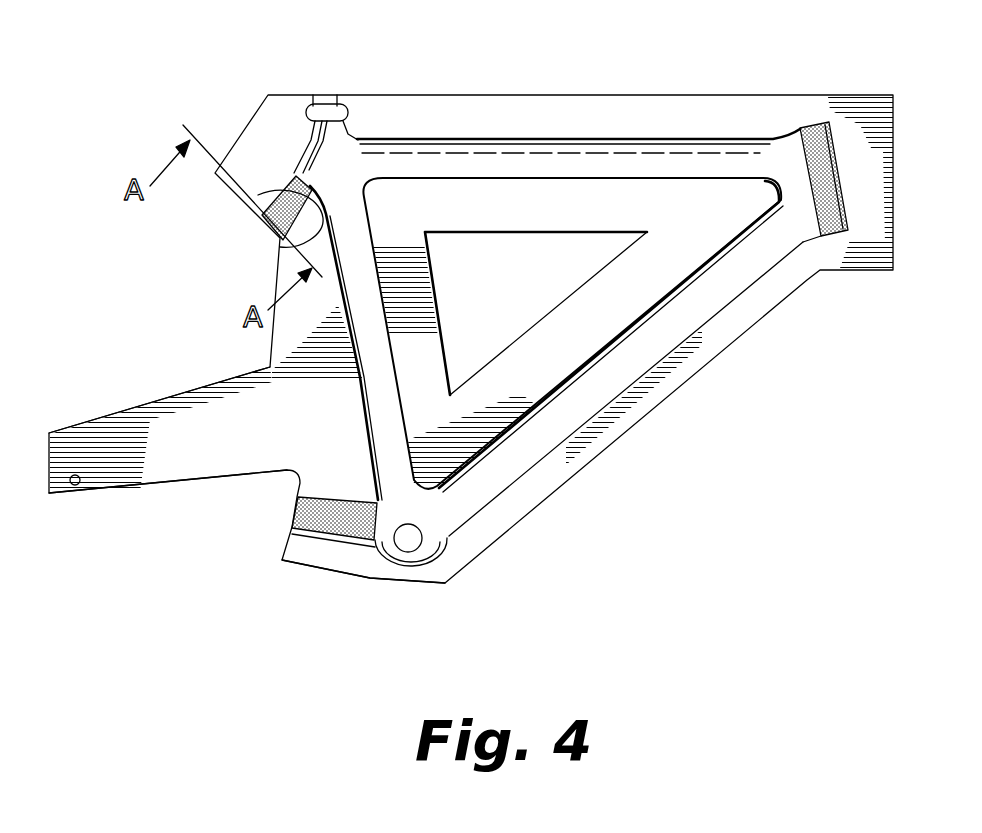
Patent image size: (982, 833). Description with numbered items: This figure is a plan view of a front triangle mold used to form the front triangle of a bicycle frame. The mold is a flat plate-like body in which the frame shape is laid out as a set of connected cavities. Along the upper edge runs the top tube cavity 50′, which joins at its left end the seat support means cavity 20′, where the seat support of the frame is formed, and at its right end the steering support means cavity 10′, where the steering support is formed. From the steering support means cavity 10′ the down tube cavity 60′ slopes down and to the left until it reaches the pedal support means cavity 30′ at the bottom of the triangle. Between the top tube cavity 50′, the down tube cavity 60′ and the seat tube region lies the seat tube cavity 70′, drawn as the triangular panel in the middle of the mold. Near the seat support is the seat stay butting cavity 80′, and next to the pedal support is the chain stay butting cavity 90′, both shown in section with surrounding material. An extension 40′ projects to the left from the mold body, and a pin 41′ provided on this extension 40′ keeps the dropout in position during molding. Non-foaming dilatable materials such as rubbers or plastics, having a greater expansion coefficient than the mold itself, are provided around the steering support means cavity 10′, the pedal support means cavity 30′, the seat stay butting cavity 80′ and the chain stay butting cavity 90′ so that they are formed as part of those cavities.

The seat support means cavity 20′ is at (345, 140).
The top tube cavity 50′ is at (593, 157).
The steering support means cavity 10′ is at (795, 158).
The seat stay butting cavity 80′ is at (280, 247).
The seat tube cavity 70′ is at (400, 343).
The down tube cavity 60′ is at (570, 413).
The extension 40′ is at (190, 413).
The pin 41′ is at (76, 474).
The pedal support means cavity 30′ is at (423, 538).
The chain stay butting cavity 90′ is at (356, 582).